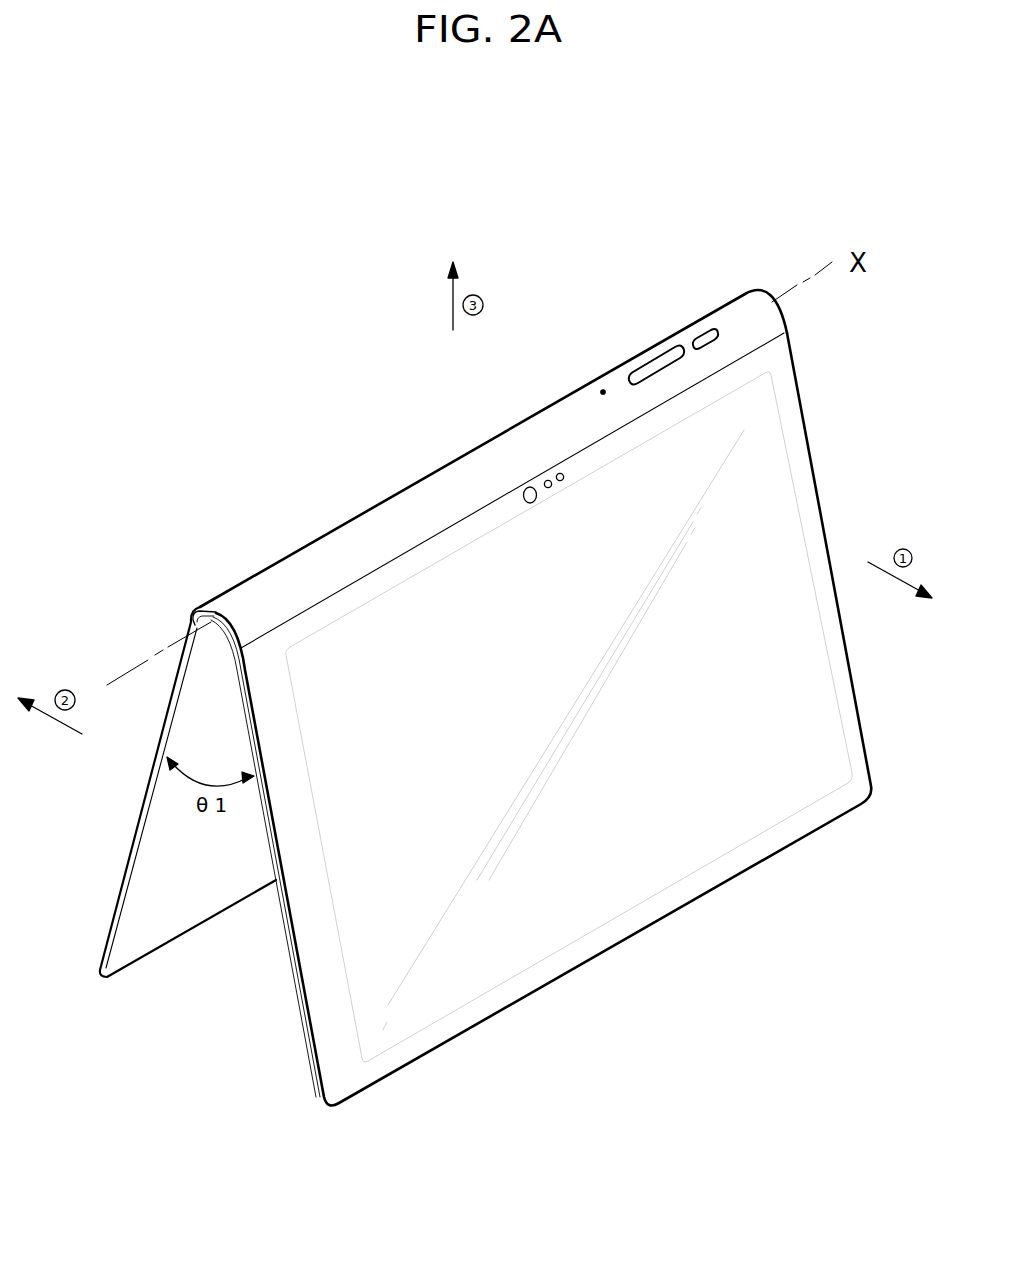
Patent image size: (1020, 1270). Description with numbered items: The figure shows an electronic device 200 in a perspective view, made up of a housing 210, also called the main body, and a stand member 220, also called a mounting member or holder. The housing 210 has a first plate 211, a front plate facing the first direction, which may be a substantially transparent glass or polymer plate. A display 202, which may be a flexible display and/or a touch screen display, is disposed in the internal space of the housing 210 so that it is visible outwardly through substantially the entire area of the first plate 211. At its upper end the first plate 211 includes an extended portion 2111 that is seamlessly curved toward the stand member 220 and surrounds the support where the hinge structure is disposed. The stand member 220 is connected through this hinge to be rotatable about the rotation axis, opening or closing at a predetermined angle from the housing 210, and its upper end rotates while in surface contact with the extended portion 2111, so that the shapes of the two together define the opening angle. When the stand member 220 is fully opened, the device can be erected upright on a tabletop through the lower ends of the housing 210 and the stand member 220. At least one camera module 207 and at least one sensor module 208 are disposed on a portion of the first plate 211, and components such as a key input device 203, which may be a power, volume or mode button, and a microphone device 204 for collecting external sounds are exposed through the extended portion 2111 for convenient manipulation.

The electronic device 200 is at (233, 442).
The housing 210 is at (305, 1058).
The first plate 211 is at (778, 836).
The extended portion 2111 is at (422, 500).
The display 202 is at (782, 673).
The key input device 203 is at (705, 327).
The microphone device 204 is at (602, 390).
The camera module 207 is at (527, 482).
The sensor module 208 is at (562, 472).
The stand member 220 is at (130, 932).